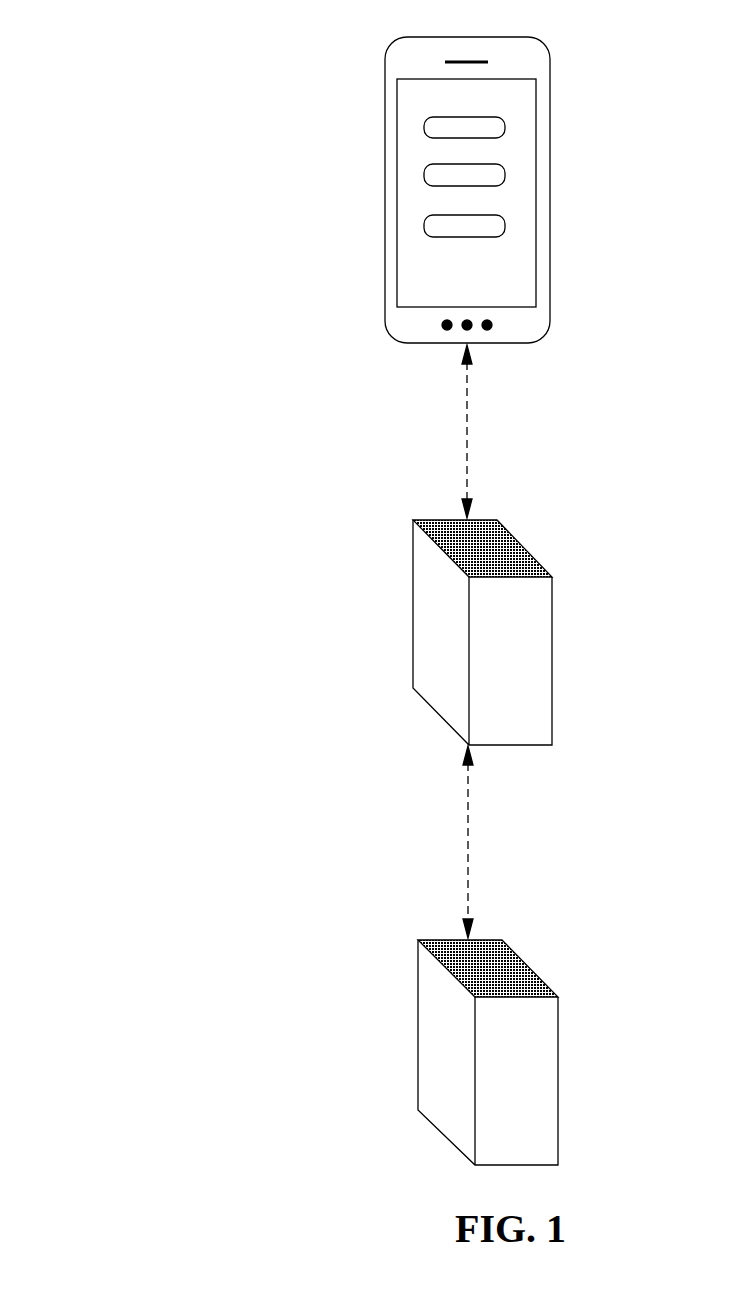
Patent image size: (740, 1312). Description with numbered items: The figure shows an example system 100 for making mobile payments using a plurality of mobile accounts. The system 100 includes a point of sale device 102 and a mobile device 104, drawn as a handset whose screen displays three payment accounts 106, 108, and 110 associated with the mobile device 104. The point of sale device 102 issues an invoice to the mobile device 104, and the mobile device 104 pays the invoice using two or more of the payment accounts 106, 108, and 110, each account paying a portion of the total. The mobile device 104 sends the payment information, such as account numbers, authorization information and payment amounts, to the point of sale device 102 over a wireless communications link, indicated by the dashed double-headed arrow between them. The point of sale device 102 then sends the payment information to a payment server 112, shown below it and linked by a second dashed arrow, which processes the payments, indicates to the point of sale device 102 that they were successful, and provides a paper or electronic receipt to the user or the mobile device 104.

The system 100 is at (138, 82).
The point of sale device 102 is at (552, 577).
The mobile device 104 is at (543, 42).
The payment account 106 is at (505, 128).
The payment account 108 is at (505, 176).
The payment account 110 is at (505, 226).
The payment server 112 is at (558, 997).